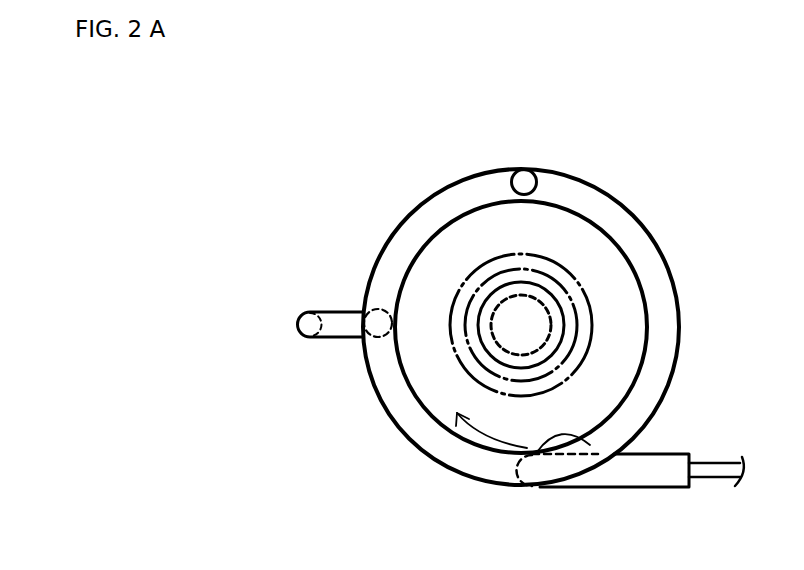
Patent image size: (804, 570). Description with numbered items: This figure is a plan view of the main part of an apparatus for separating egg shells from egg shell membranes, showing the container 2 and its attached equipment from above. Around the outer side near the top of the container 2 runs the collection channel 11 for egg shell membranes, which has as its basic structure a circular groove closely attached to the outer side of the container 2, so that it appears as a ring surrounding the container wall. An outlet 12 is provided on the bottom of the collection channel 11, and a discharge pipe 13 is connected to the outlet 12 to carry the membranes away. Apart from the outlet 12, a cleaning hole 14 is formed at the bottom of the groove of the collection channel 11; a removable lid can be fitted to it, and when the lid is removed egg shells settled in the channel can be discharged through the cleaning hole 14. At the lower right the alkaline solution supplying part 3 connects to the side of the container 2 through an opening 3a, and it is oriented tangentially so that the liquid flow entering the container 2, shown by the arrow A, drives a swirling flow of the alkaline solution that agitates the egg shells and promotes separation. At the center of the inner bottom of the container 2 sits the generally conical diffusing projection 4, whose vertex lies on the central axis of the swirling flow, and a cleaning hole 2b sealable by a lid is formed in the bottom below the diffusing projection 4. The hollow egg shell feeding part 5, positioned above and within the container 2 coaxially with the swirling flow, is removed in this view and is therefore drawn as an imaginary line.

The container 2 is at (648, 347).
The cleaning hole 2b is at (545, 337).
The alkaline solution supplying part 3 is at (657, 452).
The opening 3a is at (590, 445).
The diffusing projection 4 is at (557, 313).
The egg shell feeding part 5 is at (548, 278).
The collection channel 11 is at (432, 212).
The outlet 12 is at (380, 315).
The discharge pipe 13 is at (343, 327).
The cleaning hole 14 is at (525, 182).
The arrow A is at (472, 435).